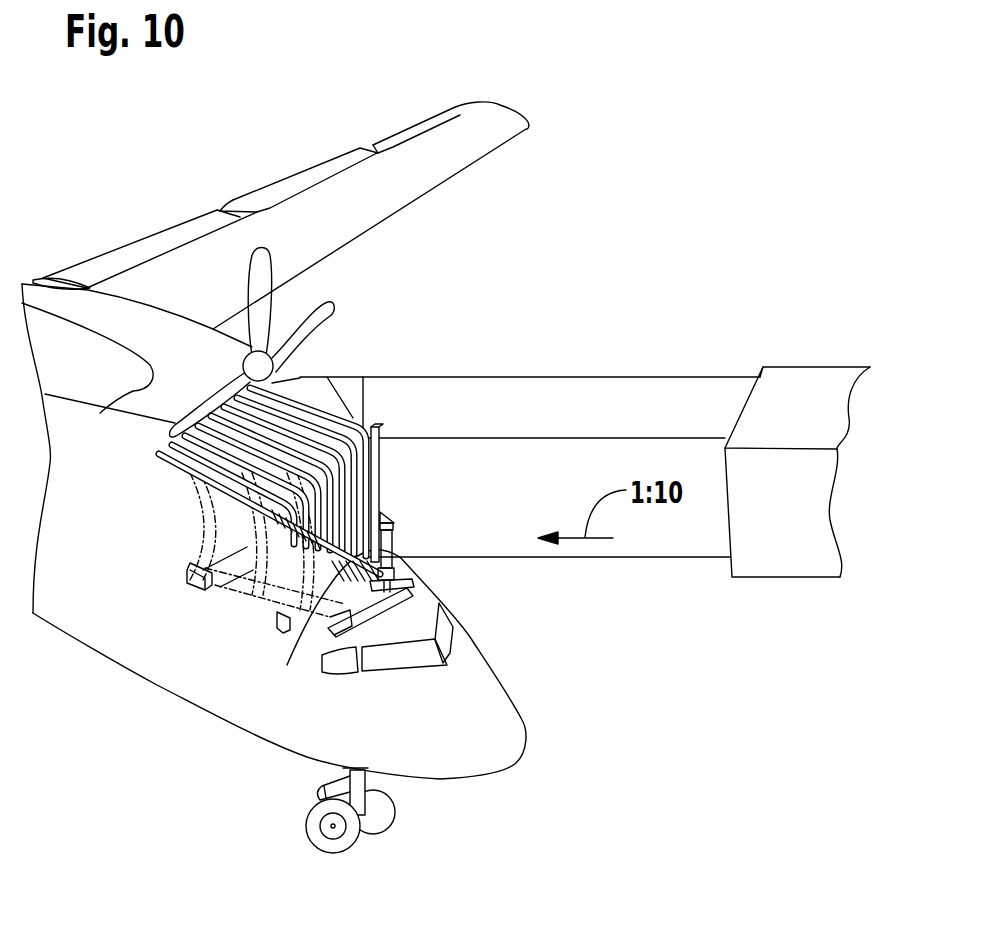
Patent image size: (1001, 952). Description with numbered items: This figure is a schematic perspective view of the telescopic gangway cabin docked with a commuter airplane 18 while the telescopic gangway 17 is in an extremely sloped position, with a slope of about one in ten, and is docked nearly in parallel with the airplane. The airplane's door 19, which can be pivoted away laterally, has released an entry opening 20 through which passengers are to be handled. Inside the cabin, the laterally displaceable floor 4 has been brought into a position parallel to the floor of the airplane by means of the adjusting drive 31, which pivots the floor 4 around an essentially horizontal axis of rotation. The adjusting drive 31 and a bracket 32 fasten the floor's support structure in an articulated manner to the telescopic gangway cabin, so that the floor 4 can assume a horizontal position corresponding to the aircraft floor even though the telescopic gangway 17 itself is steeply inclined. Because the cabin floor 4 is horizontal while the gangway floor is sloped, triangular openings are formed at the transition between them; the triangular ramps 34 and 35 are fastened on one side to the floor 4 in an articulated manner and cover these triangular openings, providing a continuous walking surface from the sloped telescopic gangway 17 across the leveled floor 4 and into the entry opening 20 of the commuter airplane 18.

The floor 4 is at (340, 583).
The telescopic gangway 17 is at (610, 398).
The commuter airplane 18 is at (217, 688).
The door 19 is at (272, 585).
The entry opening 20 is at (218, 580).
The adjusting drive 31 is at (390, 545).
The bracket 32 is at (383, 520).
The triangular ramp 34 is at (285, 541).
The triangular ramp 35 is at (300, 640).